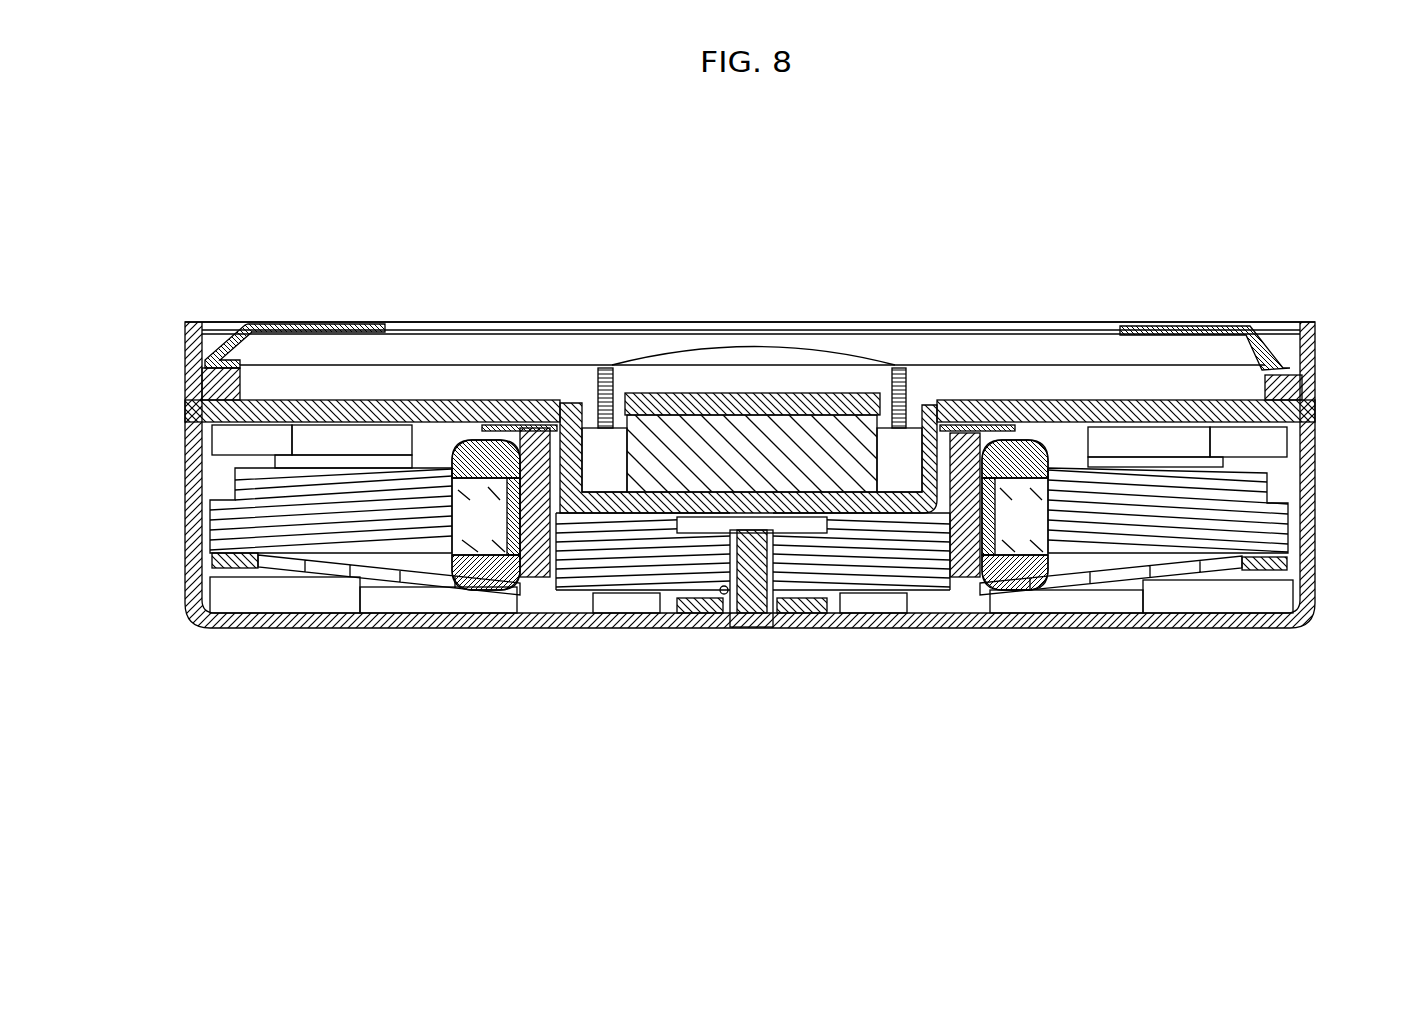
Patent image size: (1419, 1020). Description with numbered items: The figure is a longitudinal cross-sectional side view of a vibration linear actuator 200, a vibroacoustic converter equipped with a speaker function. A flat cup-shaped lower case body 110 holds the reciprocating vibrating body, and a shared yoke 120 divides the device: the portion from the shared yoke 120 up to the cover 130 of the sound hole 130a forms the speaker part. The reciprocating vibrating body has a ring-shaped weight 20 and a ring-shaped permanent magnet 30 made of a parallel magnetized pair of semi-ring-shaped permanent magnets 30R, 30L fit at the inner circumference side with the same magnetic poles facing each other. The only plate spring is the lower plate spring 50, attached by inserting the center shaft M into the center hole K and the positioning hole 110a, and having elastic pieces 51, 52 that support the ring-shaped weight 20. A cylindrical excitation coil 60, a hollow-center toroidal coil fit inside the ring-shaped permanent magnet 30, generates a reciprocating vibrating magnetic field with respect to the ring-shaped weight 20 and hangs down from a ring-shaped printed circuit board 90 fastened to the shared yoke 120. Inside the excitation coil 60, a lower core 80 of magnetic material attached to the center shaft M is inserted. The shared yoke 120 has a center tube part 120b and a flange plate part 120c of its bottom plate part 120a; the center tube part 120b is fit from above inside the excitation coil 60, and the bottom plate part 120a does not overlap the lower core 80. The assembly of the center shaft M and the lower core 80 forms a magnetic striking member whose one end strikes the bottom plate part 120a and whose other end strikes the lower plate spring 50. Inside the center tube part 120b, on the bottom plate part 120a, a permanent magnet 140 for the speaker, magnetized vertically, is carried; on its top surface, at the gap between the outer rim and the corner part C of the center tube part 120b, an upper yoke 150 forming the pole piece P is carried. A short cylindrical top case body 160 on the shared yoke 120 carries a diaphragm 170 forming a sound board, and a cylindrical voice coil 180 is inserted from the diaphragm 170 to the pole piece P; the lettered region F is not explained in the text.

The vibration linear actuator 200 is at (256, 182).
The lower case body 110 is at (333, 622).
The positioning hole 110a is at (732, 614).
The cover 130 is at (1197, 323).
The sound hole 130a is at (1098, 323).
The diaphragm 170 is at (417, 322).
The frame portion F is at (400, 365).
The top case body 160 is at (1318, 383).
The ring-shaped printed circuit board 90 is at (1005, 415).
The shared yoke 120 is at (485, 192).
The bottom plate part 120a is at (660, 497).
The center tube part 120b is at (592, 430).
The flange plate part 120c is at (535, 425).
The upper yoke 150 is at (773, 397).
The permanent magnet for a speaker 140 is at (837, 452).
The voice coil 180 is at (900, 368).
The pole piece P is at (918, 400).
The corner part C is at (950, 335).
The ring-shaped permanent magnet 30 is at (868, 782).
The semi-ring-shaped permanent magnet 30R is at (472, 545).
The semi-ring-shaped permanent magnet 30L is at (985, 445).
The excitation coil 60 is at (530, 580).
The ring-shaped weight 20 is at (207, 522).
The lower core 80 is at (840, 557).
The elastic piece 52 is at (212, 565).
The elastic piece 51 is at (1287, 565).
The lower plate spring 50 is at (427, 590).
The center shaft M is at (744, 614).
The center hole K is at (720, 592).